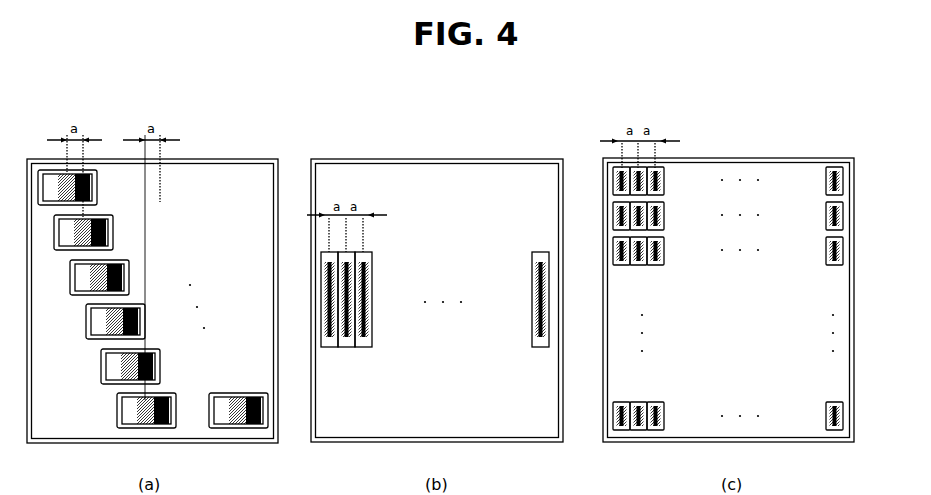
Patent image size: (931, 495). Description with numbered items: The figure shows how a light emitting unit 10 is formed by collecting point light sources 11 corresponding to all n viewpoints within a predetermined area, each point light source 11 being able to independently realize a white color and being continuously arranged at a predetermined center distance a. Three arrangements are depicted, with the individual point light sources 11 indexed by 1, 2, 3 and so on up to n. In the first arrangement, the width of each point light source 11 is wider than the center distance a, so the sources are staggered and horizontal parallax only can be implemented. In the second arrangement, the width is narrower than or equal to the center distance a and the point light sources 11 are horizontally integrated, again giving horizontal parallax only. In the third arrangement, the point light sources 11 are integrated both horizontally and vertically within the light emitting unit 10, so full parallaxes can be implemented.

The light emitting unit 10 is at (257, 158).
The point light source 11 is at (440, 275).
The first unit cell 1 is at (73, 187).
The second unit cell 2 is at (89, 232).
The third unit cell 3 is at (104, 277).